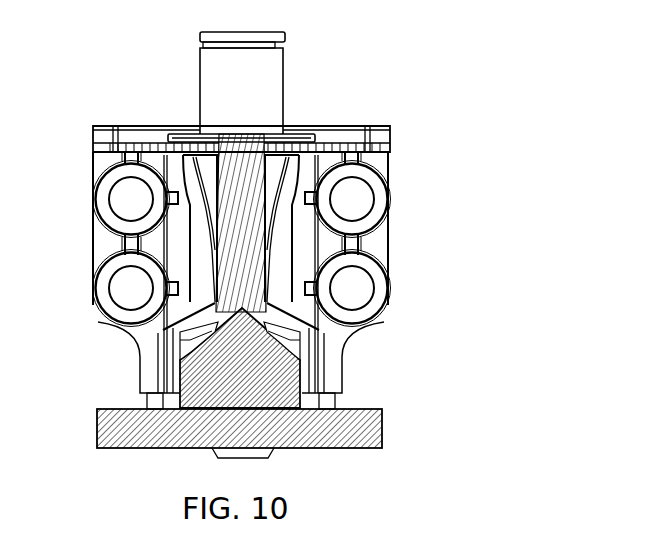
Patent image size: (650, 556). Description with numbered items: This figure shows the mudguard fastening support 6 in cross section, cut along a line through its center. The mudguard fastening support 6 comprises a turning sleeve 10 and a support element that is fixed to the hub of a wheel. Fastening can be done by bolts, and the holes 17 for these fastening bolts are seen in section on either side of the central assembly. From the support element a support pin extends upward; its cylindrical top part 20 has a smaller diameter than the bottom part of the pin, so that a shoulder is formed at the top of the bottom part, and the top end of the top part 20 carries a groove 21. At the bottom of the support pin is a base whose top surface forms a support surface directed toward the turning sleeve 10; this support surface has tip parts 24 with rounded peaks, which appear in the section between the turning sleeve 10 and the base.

The mudguard fastening support 6 is at (264, 264).
The turning sleeve 10 is at (262, 318).
The holes 17 is at (130, 193).
The top part 20 is at (263, 93).
The groove 21 is at (203, 45).
The tip parts 24 is at (242, 310).